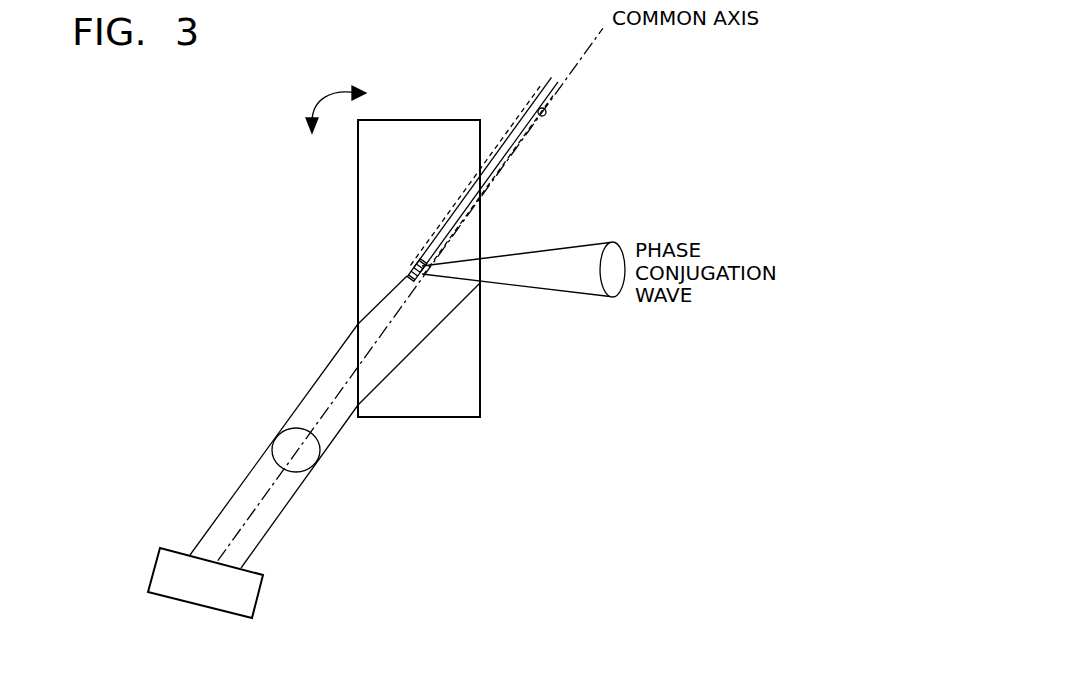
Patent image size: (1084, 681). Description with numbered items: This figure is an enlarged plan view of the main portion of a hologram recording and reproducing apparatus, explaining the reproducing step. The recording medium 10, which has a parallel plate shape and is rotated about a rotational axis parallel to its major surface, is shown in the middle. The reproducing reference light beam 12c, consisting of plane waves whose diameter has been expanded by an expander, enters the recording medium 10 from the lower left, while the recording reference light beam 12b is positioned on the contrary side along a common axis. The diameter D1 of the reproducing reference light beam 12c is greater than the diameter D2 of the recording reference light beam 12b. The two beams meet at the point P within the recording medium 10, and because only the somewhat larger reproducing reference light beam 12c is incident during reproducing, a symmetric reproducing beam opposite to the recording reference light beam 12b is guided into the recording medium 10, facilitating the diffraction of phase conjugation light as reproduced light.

The recording medium 10 is at (420, 153).
The recording reference light beam 12b is at (517, 155).
The reproducing reference light beam 12c is at (323, 390).
The light beam intersection point P is at (408, 272).
The diameter of the reproducing reference light beam D1 is at (250, 418).
The diameter of the recording reference light beam D2 is at (513, 92).